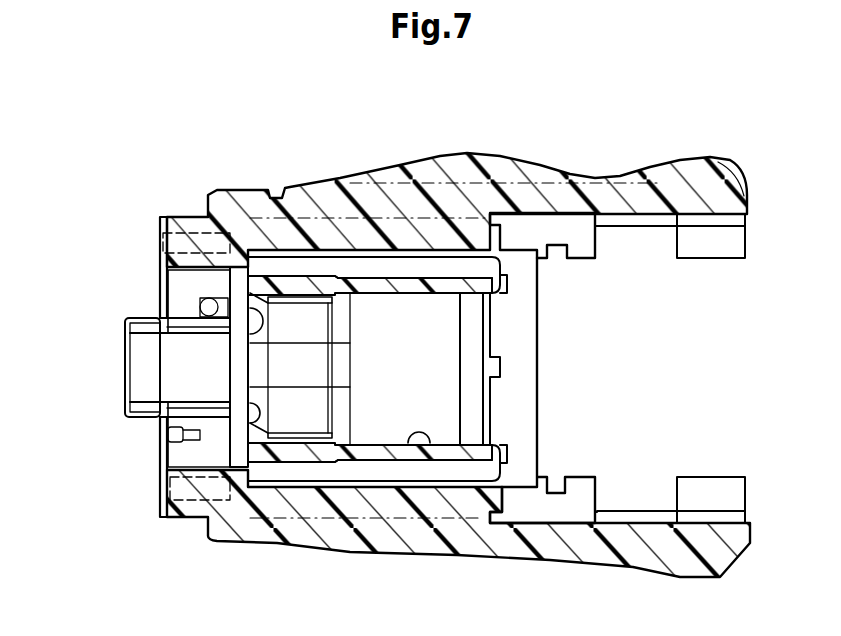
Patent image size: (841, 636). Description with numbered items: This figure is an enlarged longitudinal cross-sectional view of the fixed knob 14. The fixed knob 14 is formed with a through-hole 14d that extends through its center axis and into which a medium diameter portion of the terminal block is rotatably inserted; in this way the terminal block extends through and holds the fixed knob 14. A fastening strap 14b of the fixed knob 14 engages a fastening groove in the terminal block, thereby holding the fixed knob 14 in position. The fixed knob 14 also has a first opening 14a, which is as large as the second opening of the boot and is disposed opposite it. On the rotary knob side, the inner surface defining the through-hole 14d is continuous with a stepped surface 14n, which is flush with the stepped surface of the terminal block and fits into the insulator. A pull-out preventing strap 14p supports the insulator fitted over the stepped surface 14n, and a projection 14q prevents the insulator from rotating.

The fixed knob 14 is at (524, 156).
The first opening 14a is at (707, 217).
The fastening strap 14b is at (247, 335).
The stepped surface 14n is at (233, 346).
The pull-out preventing strap 14p is at (168, 436).
The projection 14q is at (203, 303).
The through-hole 14d is at (420, 447).